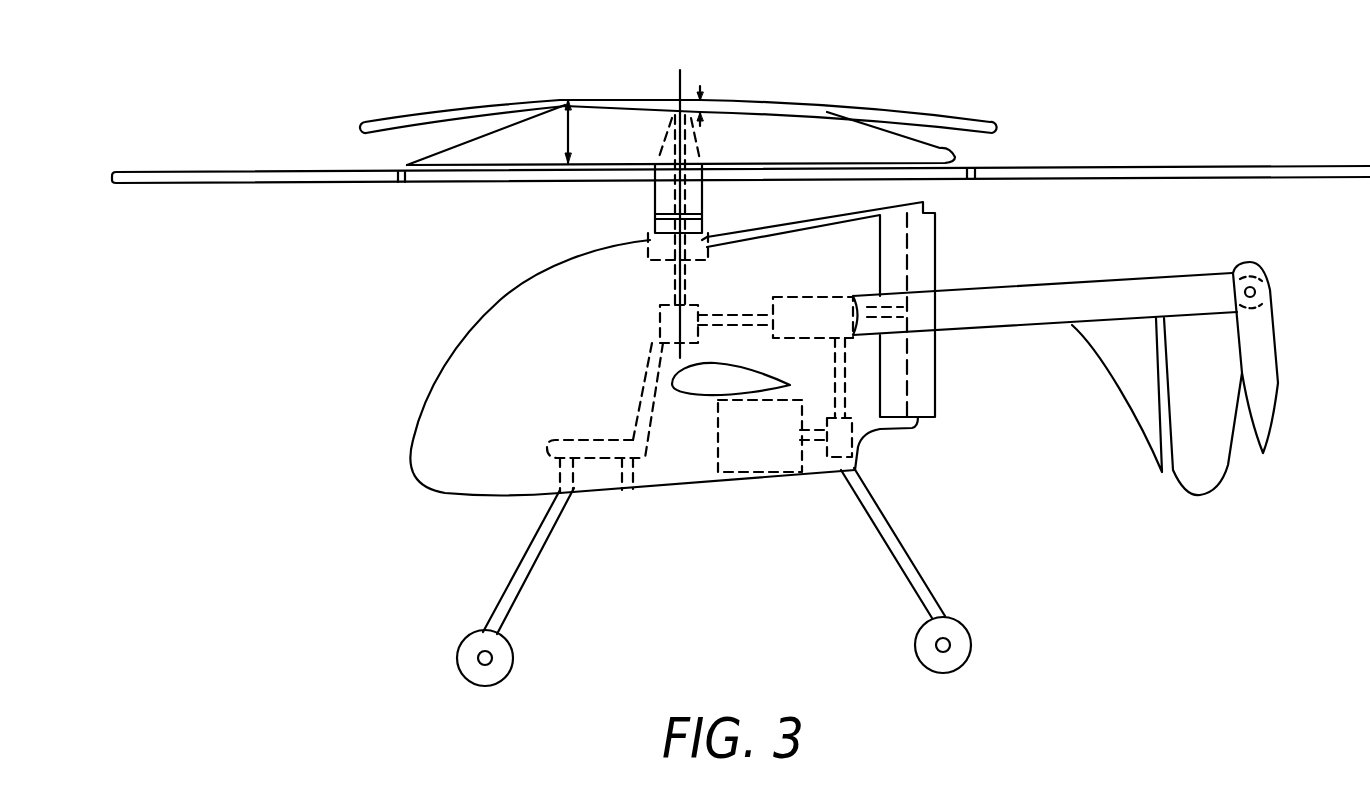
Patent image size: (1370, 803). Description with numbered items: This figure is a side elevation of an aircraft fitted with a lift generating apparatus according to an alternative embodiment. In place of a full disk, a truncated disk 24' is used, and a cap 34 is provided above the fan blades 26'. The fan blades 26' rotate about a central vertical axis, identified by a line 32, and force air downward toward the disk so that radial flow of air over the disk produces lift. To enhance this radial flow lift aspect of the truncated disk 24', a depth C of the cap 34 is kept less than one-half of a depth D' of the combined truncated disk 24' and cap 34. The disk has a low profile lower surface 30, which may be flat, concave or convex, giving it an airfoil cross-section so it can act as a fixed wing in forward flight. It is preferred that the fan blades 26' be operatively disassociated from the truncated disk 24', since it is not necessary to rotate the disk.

The truncated disk 24' is at (740, 137).
The fan blades 26' is at (678, 96).
The lower surface 30 is at (492, 168).
The central vertical axis 32 is at (684, 97).
The cap 34 is at (750, 103).
The depth of the cap C is at (700, 87).
The depth of the combined truncated disk and cap D' is at (548, 131).